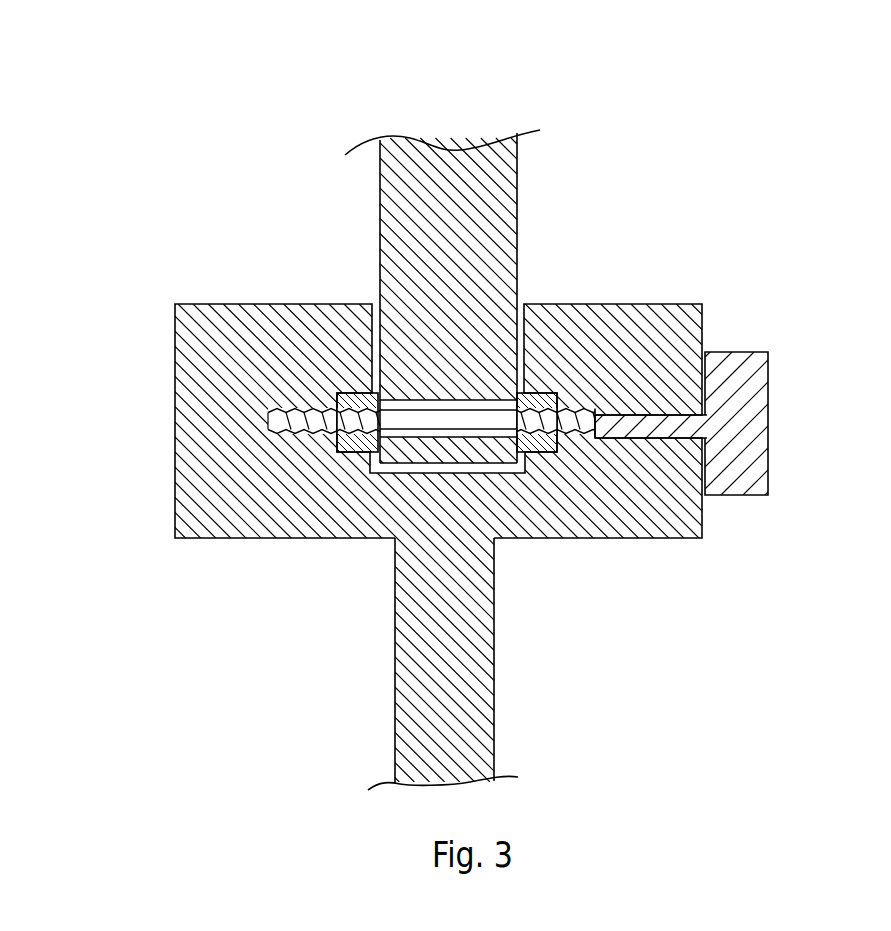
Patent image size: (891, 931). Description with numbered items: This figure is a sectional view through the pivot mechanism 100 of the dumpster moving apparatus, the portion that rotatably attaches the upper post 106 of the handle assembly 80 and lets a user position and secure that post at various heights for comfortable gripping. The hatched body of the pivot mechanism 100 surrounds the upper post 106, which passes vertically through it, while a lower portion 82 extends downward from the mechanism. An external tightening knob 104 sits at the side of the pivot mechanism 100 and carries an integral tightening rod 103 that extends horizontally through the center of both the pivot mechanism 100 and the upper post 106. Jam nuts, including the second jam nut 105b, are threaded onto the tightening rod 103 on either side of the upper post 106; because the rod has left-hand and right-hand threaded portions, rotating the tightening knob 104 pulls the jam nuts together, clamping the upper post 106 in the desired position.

The handle assembly 80 is at (108, 179).
The base stem 82 is at (494, 700).
The pivot mechanism 100 is at (658, 302).
The tightening rod 103 is at (337, 400).
The tightening knob 104 is at (768, 354).
The second jam nut 105b is at (350, 452).
The upper post 106 is at (517, 212).